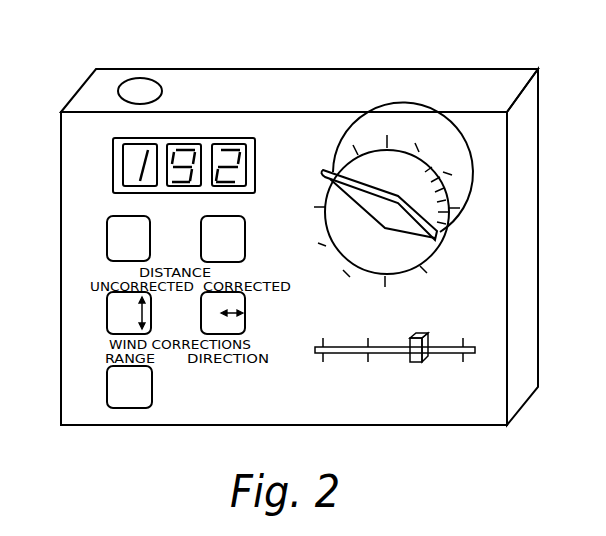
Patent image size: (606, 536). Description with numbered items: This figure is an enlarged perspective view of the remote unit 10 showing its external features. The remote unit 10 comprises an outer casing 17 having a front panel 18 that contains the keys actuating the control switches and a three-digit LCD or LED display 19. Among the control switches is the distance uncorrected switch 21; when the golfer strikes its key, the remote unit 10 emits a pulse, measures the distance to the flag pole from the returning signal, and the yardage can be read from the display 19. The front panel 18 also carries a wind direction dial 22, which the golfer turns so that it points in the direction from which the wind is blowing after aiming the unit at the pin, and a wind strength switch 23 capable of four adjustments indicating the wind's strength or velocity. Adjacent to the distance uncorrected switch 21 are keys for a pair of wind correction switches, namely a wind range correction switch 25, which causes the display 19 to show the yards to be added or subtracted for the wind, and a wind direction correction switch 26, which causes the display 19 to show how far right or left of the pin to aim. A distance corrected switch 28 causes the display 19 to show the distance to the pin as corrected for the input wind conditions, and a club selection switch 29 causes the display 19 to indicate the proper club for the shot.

The remote unit 10 is at (333, 62).
The outer casing 17 is at (508, 80).
The front panel 18 is at (61, 206).
The three-digit LCD or LED display 19 is at (256, 160).
The distance uncorrected switch 21 is at (107, 256).
The wind direction dial 22 is at (425, 172).
The wind strength switch 23 is at (452, 330).
The wind range correction switch 25 is at (107, 326).
The wind direction correction switch 26 is at (245, 322).
The distance corrected switch 28 is at (245, 245).
The club selection switch 29 is at (107, 396).